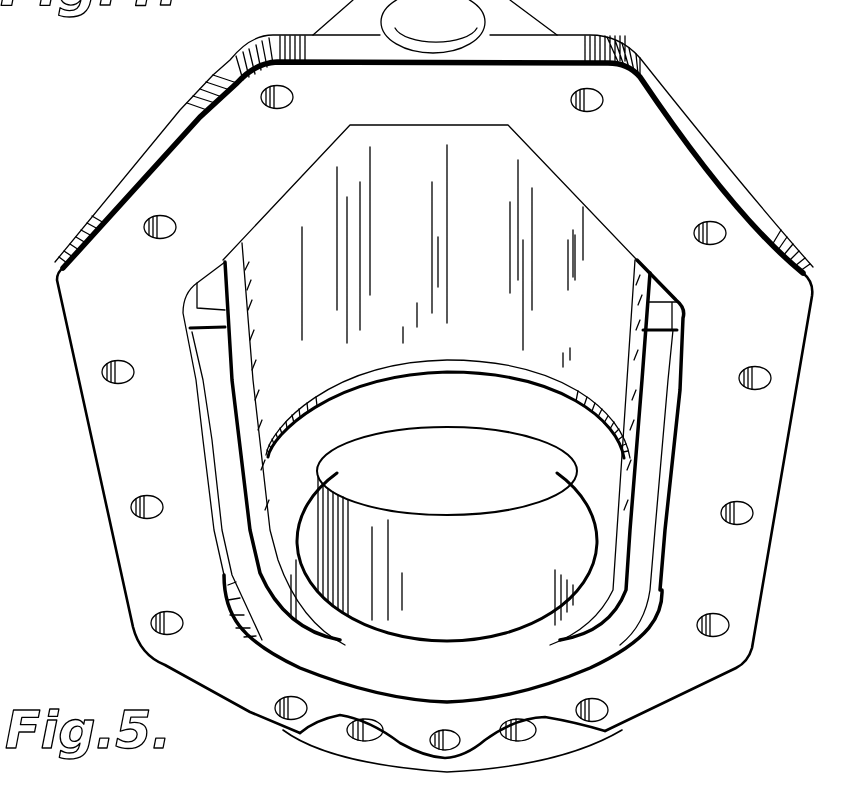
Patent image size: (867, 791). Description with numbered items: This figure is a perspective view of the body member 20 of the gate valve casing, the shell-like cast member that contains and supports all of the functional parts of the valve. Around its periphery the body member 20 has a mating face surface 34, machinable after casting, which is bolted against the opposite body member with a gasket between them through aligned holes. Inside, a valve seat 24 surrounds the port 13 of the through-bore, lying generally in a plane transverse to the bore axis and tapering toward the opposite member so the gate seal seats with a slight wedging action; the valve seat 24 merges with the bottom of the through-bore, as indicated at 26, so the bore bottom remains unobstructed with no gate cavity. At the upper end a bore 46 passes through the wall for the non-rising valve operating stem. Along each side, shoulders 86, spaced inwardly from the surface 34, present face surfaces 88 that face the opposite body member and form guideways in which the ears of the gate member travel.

The port 13 is at (468, 428).
The body member 20 is at (690, 127).
The valve seat 24 is at (447, 414).
The merging of valve seat with bottom of through-bore 26 is at (440, 678).
The mating face surface 34 is at (693, 187).
The bore 46 is at (450, 44).
The shoulder 86 is at (190, 330).
The face surface 88 is at (223, 411).